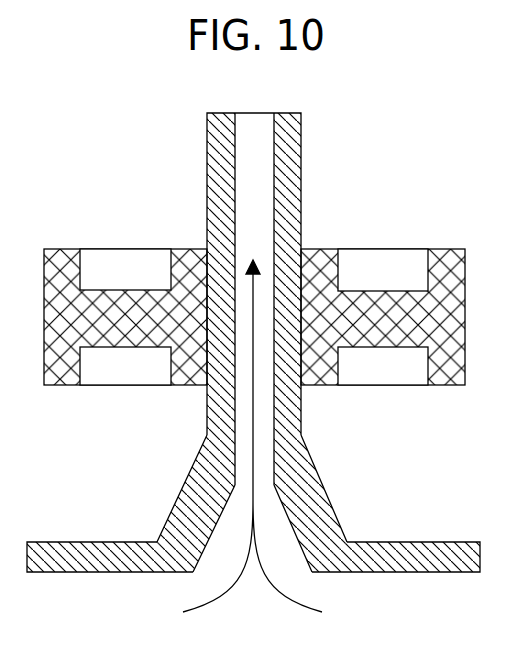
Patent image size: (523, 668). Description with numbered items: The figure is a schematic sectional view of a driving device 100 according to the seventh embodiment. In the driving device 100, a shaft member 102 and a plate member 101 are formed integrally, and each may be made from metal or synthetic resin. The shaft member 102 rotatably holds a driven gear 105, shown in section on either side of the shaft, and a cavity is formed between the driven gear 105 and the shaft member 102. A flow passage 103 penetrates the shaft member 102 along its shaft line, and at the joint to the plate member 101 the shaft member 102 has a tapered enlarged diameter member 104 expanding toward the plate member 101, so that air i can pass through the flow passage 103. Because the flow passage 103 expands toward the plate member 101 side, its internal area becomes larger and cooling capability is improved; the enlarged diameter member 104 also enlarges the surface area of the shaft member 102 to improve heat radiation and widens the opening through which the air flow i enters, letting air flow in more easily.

The driving device 100 is at (402, 152).
The plate member 101 is at (430, 543).
The shaft member 102 is at (302, 168).
The flow passage 103 is at (243, 176).
The enlarged diameter member 104 is at (323, 490).
The driven gear 105 is at (383, 250).
The air i is at (252, 454).